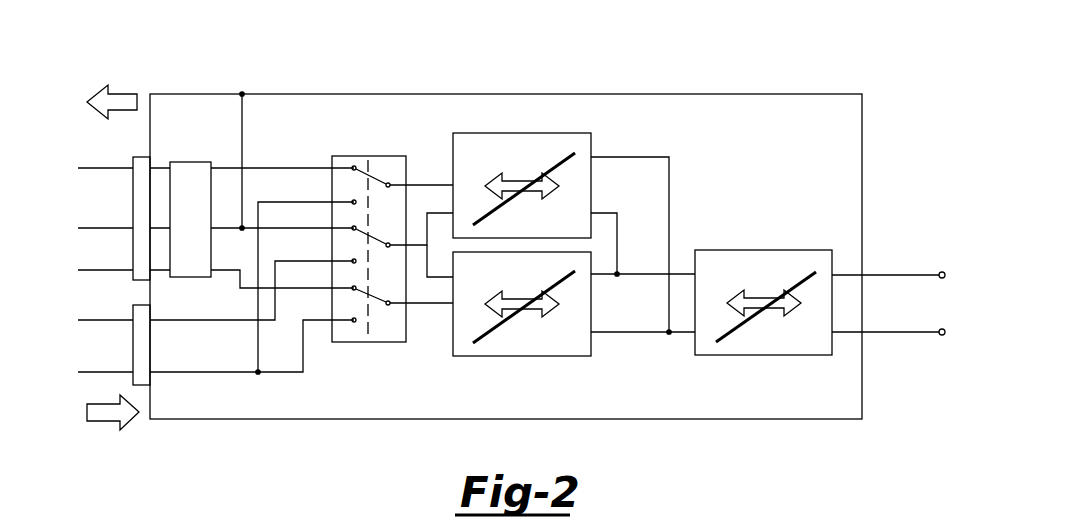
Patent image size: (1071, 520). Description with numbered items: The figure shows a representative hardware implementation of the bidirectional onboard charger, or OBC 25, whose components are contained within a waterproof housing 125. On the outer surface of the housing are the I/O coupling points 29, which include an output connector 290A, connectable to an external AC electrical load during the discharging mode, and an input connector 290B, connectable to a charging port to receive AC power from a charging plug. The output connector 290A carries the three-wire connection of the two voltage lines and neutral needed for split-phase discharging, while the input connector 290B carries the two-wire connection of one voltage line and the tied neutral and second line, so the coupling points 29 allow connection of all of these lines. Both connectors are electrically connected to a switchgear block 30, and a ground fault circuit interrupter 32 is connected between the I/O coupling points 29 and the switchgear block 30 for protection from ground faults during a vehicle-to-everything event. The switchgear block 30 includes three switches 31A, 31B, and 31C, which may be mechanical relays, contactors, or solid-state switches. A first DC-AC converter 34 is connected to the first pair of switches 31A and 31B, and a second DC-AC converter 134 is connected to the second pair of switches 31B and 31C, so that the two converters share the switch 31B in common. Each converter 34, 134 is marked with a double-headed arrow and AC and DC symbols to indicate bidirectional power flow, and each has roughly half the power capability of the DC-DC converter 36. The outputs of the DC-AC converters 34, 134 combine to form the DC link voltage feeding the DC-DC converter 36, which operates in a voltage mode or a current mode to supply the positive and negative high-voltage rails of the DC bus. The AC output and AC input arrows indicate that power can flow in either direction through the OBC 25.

The OBC 25 is at (777, 40).
The waterproof housing 125 is at (862, 155).
The I/O coupling points 29 is at (143, 410).
The output connector 290A is at (133, 192).
The input connector 290B is at (133, 342).
The ground fault circuit interrupter 32 is at (190, 162).
The switchgear block 30 is at (372, 155).
The first switch 31A is at (376, 172).
The second switch 31B is at (376, 232).
The third switch 31C is at (375, 308).
The first DC-AC converter 34 is at (522, 133).
The second DC-AC converter 134 is at (521, 356).
The DC-DC converter 36 is at (765, 250).